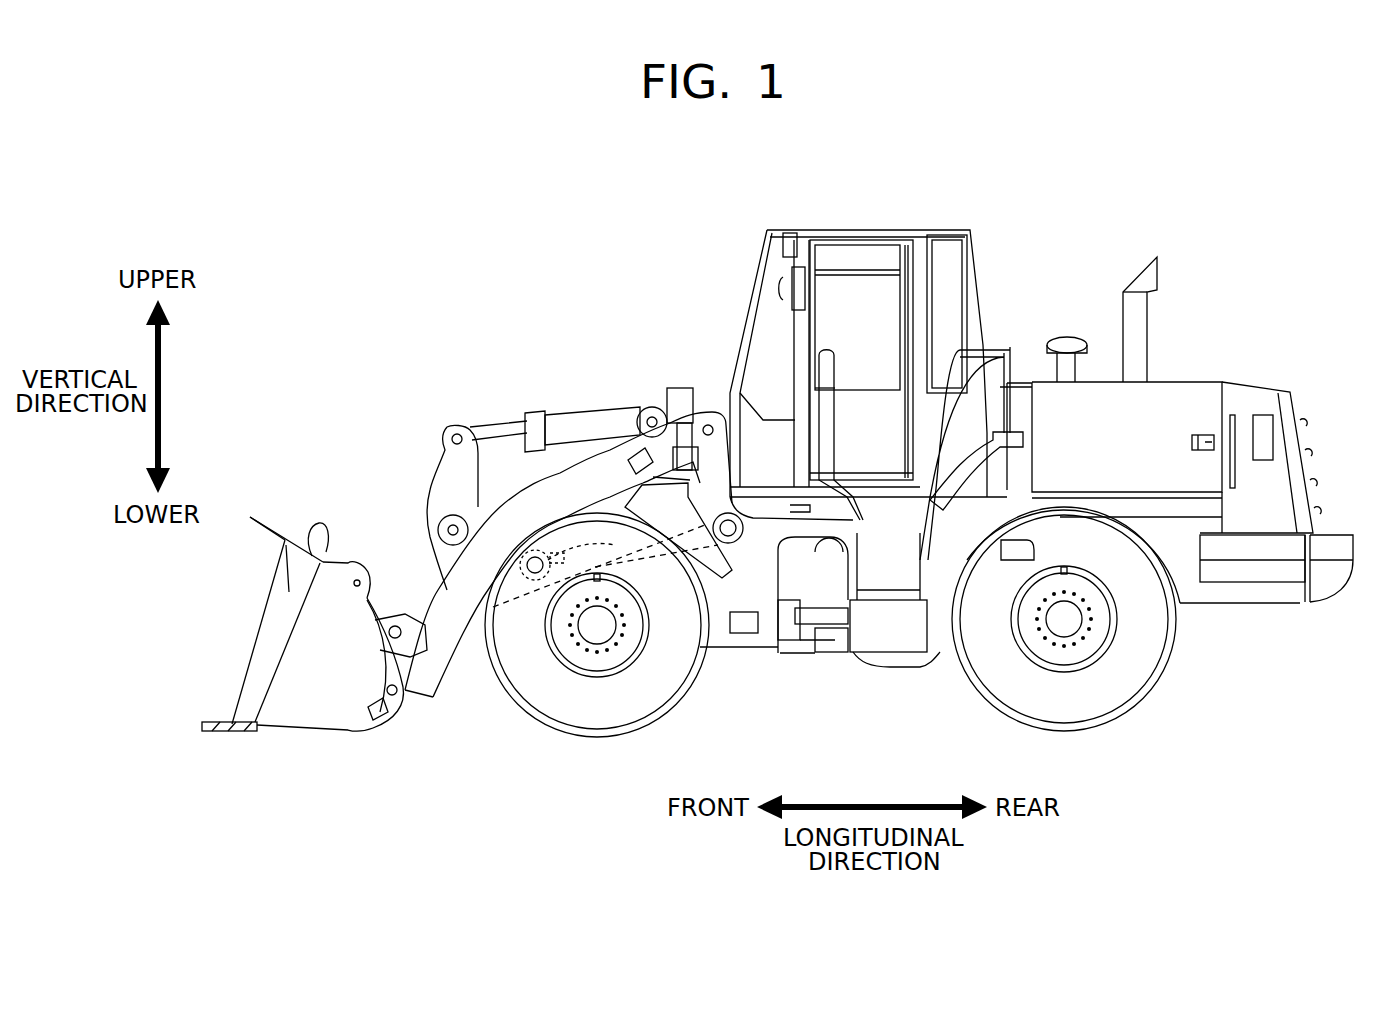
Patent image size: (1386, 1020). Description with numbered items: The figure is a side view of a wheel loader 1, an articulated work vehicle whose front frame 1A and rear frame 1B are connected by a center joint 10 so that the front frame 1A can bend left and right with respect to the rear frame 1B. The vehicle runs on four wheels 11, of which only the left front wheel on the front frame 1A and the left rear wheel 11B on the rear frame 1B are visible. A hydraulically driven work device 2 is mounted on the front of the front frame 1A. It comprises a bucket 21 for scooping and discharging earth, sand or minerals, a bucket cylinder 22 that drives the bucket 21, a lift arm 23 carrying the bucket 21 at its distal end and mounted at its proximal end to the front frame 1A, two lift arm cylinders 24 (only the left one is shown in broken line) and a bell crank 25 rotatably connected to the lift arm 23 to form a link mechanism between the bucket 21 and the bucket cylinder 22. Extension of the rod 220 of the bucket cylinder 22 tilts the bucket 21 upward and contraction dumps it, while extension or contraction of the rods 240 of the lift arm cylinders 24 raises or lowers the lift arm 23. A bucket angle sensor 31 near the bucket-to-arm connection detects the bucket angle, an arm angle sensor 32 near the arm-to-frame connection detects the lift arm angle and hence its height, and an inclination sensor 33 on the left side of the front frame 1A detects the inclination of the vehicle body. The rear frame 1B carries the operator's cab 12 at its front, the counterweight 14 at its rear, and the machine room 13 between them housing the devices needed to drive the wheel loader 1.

The wheel loader 1 is at (460, 206).
The work device 2 is at (346, 436).
The center joint 10 is at (837, 685).
The wheels 11 is at (577, 722).
The rear wheel 11B is at (1115, 697).
The operator's cab 12 is at (852, 228).
The machine room 13 is at (1204, 382).
The counterweight 14 is at (1343, 578).
The front frame 1A is at (737, 687).
The rear frame 1B is at (1243, 648).
The bucket 21 is at (305, 715).
The bucket cylinder 22 is at (565, 410).
The rod 220 is at (494, 426).
The lift arm 23 is at (445, 650).
The lift arm cylinder 24 is at (653, 562).
The rod 240 is at (562, 562).
The bell crank 25 is at (444, 483).
The bucket angle sensor 31 is at (388, 716).
The arm angle sensor 32 is at (628, 448).
The inclination sensor 33 is at (747, 624).